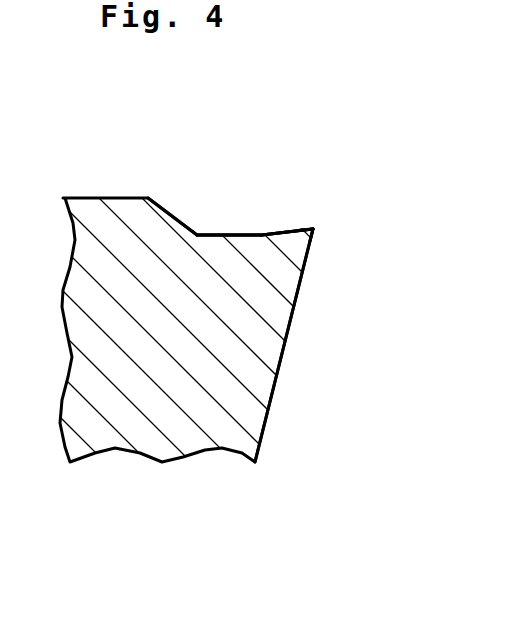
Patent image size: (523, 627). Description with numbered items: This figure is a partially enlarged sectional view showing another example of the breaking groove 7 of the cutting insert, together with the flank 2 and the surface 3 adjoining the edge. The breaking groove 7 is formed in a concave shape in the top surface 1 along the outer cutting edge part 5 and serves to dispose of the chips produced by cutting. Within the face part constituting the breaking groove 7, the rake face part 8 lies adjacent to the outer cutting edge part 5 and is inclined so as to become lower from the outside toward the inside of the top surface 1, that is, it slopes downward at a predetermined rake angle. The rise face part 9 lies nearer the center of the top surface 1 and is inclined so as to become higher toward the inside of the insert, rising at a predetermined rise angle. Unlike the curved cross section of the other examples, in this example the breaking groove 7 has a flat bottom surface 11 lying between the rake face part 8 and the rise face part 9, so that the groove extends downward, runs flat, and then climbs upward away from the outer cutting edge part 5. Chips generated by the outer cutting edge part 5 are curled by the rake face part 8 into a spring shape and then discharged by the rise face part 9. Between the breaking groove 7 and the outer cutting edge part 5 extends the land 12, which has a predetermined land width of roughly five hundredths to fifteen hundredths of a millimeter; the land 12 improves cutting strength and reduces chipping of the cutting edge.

The top surface 1 is at (115, 198).
The flank face 2 is at (281, 357).
The rake face 3 is at (300, 230).
The outer cutting edge part 5 is at (315, 228).
The breaking groove 7 is at (230, 182).
The rake face part 8 is at (285, 205).
The rise face part 9 is at (167, 210).
The flat bottom surface 11 is at (227, 235).
The land 12 is at (310, 229).